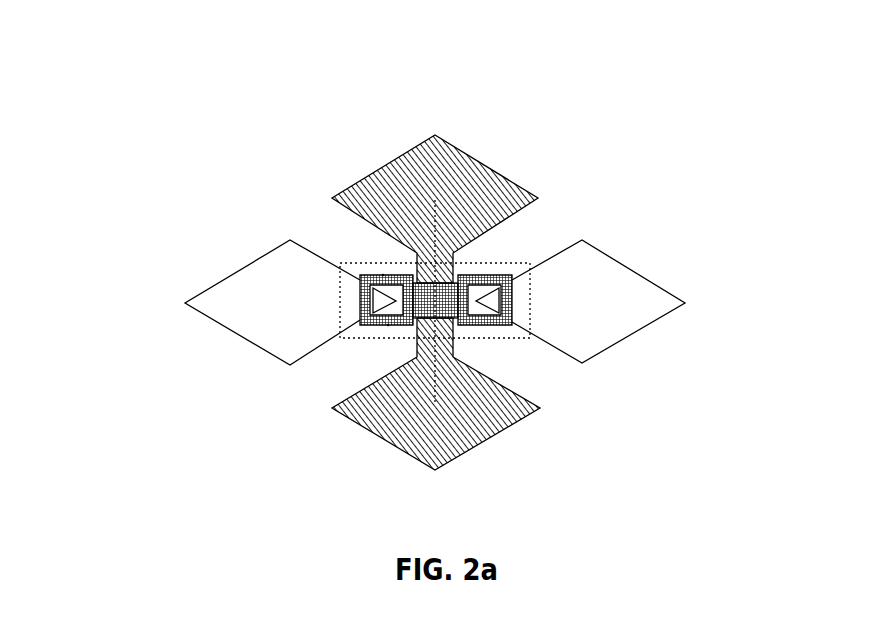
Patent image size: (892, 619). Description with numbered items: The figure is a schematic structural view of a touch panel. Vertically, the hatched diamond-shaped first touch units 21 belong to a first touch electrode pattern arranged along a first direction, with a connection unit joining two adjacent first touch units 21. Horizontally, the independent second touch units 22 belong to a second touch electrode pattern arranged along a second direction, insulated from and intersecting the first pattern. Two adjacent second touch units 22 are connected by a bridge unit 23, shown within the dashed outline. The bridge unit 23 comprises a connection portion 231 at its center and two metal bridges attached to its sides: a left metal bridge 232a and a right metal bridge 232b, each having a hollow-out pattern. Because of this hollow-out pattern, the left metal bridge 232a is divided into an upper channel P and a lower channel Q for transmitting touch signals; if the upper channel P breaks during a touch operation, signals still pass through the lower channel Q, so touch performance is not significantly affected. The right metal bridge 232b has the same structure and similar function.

The first touch unit 21 is at (433, 177).
The second touch unit 22 is at (270, 303).
The bridge unit 23 is at (409, 281).
The connection portion 231 is at (440, 283).
The left metal bridge 232a is at (370, 302).
The right metal bridge 232b is at (497, 316).
The upper channel P is at (383, 275).
The lower channel Q is at (388, 325).